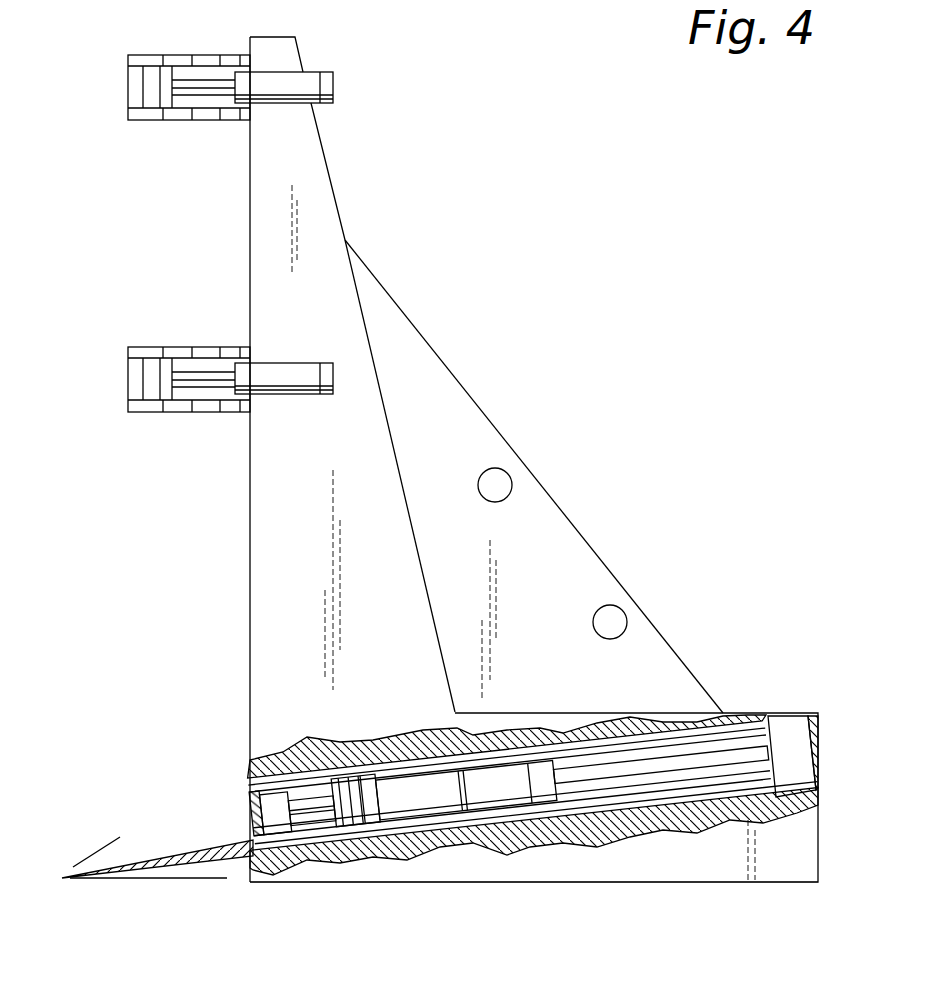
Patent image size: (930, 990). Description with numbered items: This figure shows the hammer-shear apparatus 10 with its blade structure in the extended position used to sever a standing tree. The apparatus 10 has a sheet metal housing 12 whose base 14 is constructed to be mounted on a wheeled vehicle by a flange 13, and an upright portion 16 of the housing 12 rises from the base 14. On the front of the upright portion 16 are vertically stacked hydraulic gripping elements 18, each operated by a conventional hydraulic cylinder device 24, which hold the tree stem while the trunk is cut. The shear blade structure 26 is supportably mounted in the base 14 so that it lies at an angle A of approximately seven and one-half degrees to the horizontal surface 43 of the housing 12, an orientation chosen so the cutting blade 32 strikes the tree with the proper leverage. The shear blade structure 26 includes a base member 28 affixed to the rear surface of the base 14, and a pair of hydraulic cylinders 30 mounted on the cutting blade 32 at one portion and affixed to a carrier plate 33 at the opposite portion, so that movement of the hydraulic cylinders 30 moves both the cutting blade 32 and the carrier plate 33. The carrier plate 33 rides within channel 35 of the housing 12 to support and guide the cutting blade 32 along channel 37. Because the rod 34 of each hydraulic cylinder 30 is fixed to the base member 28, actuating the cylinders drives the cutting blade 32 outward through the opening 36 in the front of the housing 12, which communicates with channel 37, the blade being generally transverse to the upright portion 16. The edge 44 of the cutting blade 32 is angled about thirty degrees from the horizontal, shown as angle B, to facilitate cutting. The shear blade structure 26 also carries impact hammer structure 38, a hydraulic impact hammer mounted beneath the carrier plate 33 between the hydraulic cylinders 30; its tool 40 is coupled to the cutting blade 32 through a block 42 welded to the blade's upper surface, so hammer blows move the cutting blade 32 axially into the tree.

The hammer-shear apparatus 10 is at (490, 338).
The housing 12 is at (478, 426).
The flange 13 is at (580, 542).
The base 14 is at (775, 868).
The upright portion 16 is at (265, 572).
The hydraulic gripping elements 18 is at (151, 62).
The hydraulic cylinder device 24 is at (312, 78).
The shear blade structure 26 is at (432, 843).
The base member 28 is at (799, 714).
The hydraulic cylinders 30 is at (508, 800).
The cutting blade 32 is at (375, 833).
The carrier plate 33 is at (380, 768).
The rod 34 is at (727, 770).
The channel 35 is at (296, 762).
The opening 36 is at (250, 843).
The channel 37 is at (607, 805).
The impact hammer structure 38 is at (573, 728).
The tool 40 is at (317, 820).
The block 42 is at (275, 868).
The horizontal surface 43 is at (681, 880).
The edge 44 is at (68, 882).
The angle A is at (173, 912).
The angle B is at (108, 840).